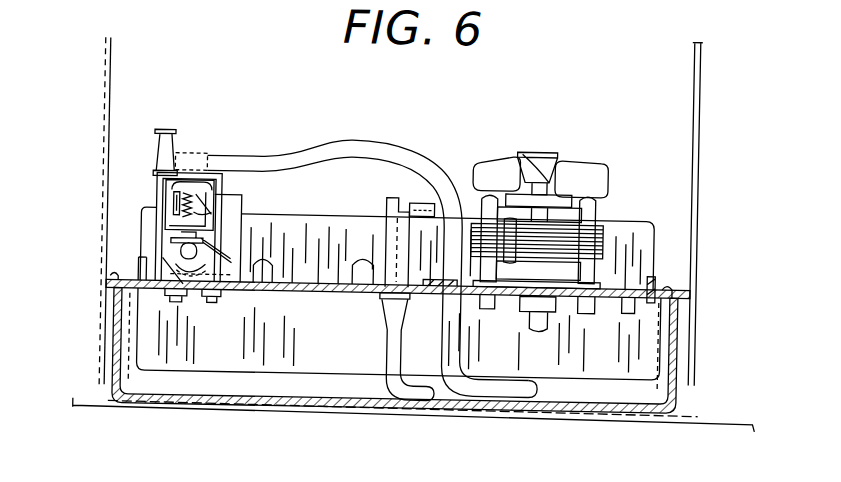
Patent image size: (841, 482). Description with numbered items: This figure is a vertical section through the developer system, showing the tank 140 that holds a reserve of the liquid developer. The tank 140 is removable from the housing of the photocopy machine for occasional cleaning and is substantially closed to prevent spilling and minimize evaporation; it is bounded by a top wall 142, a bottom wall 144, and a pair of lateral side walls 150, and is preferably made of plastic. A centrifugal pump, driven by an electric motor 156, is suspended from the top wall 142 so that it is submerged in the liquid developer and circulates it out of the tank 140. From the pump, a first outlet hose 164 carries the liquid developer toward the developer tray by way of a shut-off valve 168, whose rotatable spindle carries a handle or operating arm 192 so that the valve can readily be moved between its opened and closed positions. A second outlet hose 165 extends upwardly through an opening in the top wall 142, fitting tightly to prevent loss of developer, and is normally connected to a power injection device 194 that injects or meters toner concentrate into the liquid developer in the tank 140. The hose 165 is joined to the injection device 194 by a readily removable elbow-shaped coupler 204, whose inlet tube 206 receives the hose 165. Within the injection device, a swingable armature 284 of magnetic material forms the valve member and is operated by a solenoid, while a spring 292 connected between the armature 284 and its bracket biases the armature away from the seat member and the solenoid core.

The tank 140 is at (99, 391).
The top wall 142 is at (300, 285).
The bottom wall 144 is at (250, 400).
The lateral side walls 150 is at (112, 337).
The electric motor 156 is at (605, 234).
The first outlet hose 164 is at (389, 387).
The second outlet hose 165 is at (347, 151).
The shut-off valve 168 is at (385, 226).
The operating arm 192 is at (418, 203).
The power injection device 194 is at (164, 227).
The coupler 204 is at (155, 172).
The inlet tube 206 is at (198, 156).
The swingable armature 284 is at (205, 189).
The spring 292 is at (194, 208).